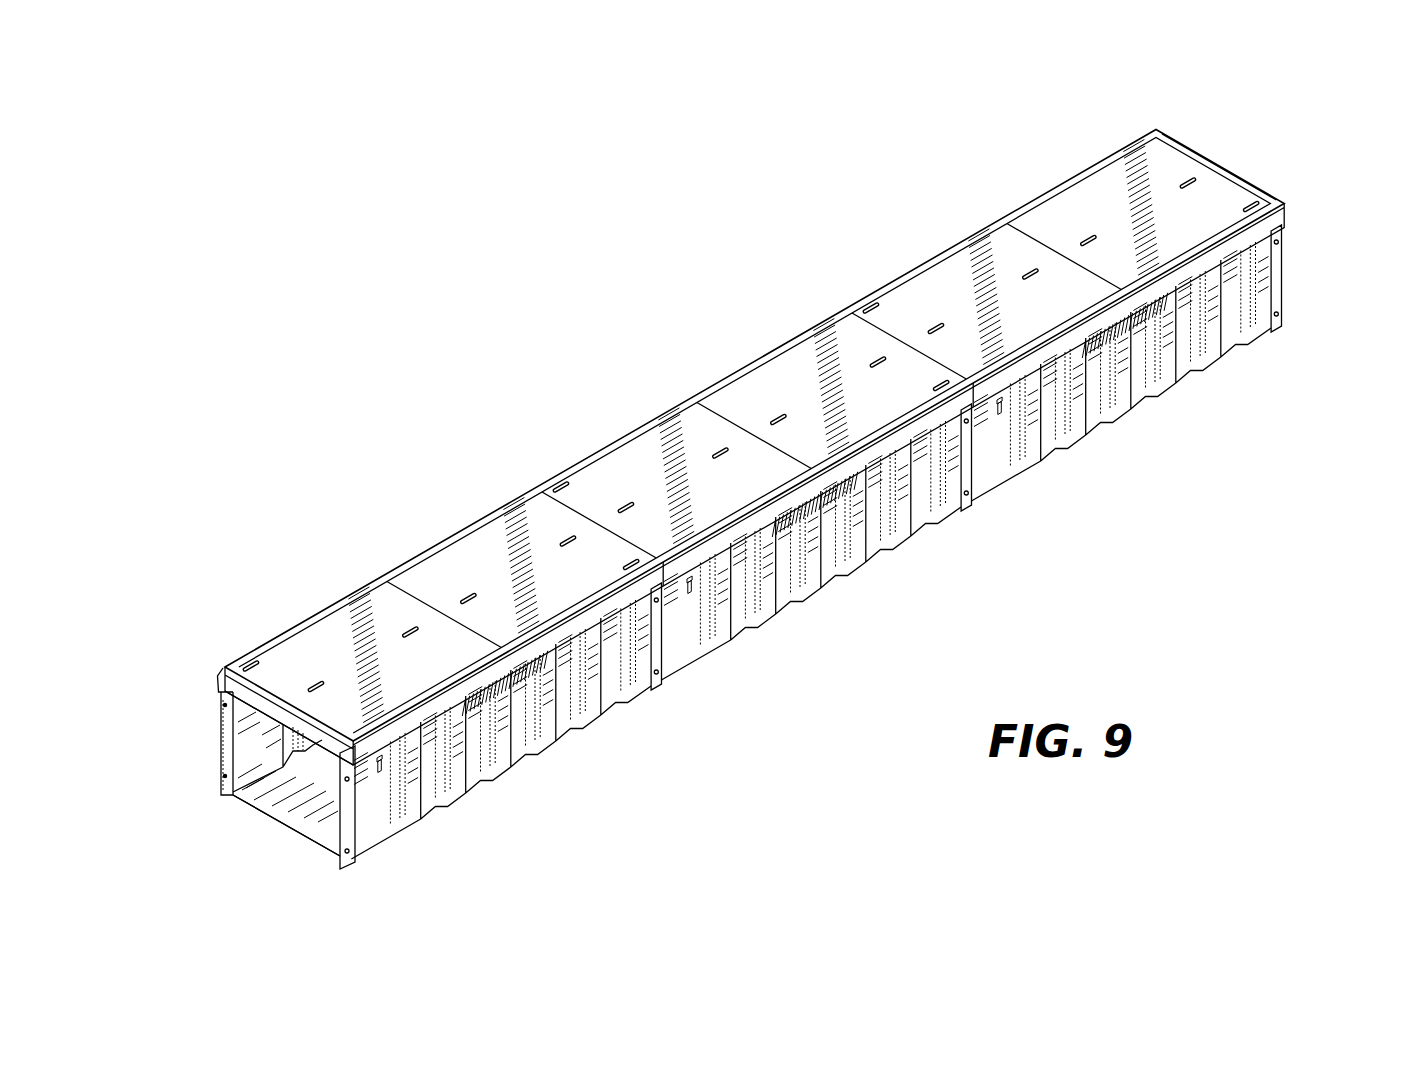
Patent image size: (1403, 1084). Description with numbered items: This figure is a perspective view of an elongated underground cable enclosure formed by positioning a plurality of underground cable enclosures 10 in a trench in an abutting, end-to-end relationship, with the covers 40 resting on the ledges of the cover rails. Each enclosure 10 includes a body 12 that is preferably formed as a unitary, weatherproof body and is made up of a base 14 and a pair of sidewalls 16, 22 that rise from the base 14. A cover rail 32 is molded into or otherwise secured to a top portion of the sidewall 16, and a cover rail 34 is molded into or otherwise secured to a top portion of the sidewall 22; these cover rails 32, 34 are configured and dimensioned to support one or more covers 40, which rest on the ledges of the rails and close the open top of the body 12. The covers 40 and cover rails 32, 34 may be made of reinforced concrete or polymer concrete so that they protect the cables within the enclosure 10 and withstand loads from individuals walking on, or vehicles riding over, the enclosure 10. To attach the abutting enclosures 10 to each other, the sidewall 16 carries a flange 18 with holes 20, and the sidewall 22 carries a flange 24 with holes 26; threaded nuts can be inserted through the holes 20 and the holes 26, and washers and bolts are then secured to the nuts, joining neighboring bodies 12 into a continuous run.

The underground cable enclosure 10 is at (976, 168).
The body 12 is at (250, 814).
The base 14 is at (322, 840).
The sidewall 16 is at (269, 767).
The flange 18 is at (227, 752).
The holes 20 is at (224, 705).
The sidewall 22 is at (1240, 332).
The flange 24 is at (1283, 290).
The holes 26 is at (1286, 241).
The cover rail 32 is at (877, 291).
The cover rail 34 is at (1100, 332).
The cover 40 is at (1069, 204).